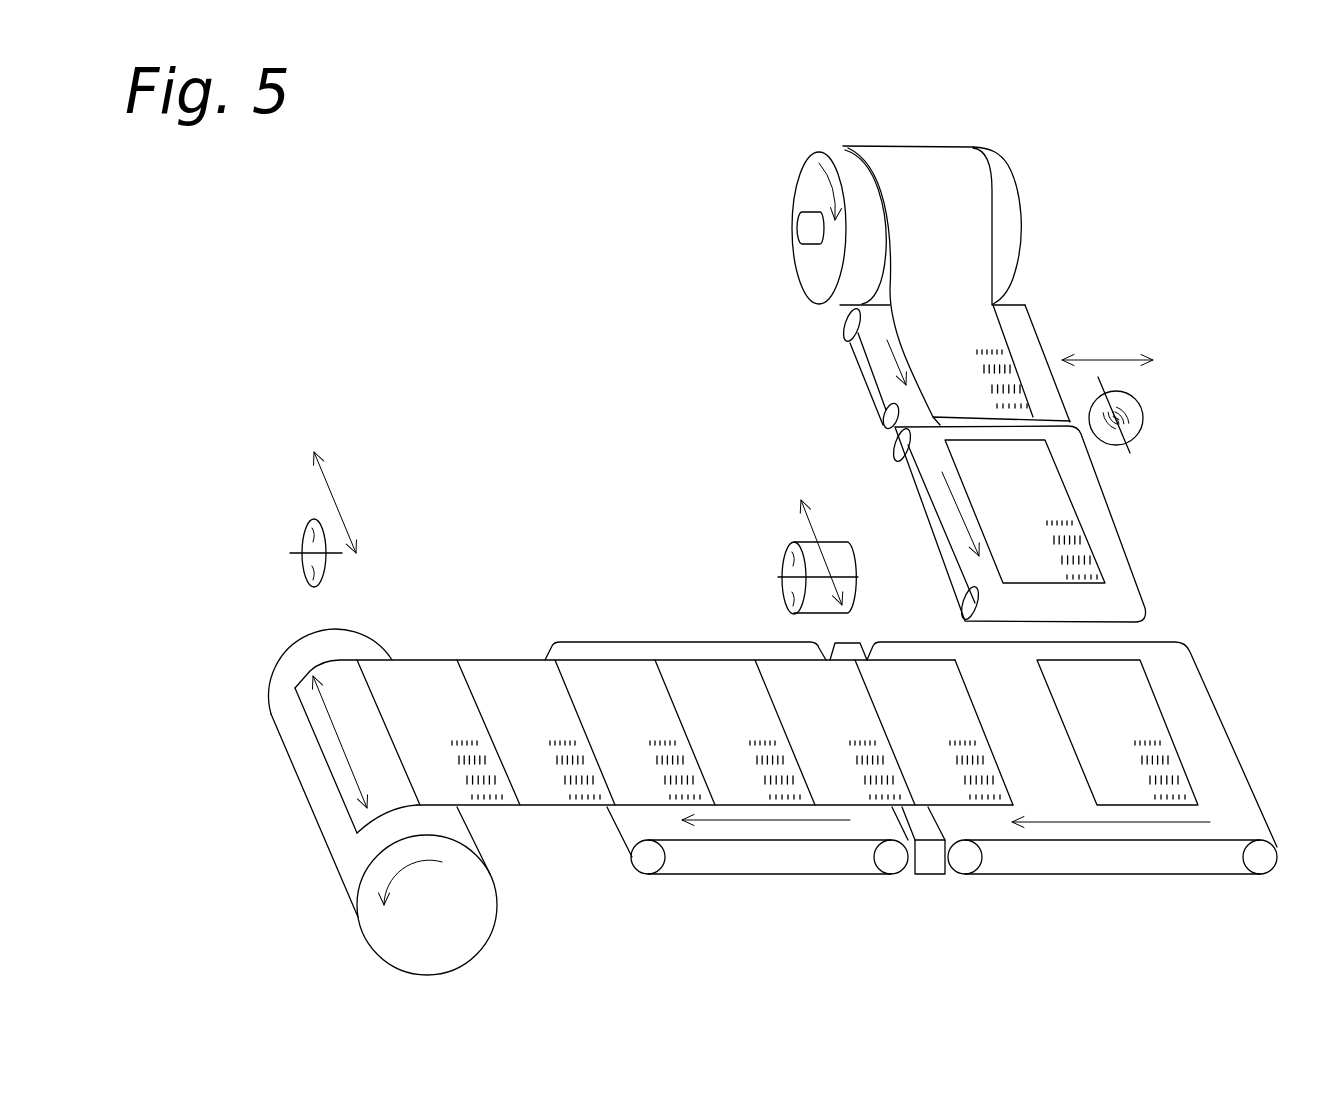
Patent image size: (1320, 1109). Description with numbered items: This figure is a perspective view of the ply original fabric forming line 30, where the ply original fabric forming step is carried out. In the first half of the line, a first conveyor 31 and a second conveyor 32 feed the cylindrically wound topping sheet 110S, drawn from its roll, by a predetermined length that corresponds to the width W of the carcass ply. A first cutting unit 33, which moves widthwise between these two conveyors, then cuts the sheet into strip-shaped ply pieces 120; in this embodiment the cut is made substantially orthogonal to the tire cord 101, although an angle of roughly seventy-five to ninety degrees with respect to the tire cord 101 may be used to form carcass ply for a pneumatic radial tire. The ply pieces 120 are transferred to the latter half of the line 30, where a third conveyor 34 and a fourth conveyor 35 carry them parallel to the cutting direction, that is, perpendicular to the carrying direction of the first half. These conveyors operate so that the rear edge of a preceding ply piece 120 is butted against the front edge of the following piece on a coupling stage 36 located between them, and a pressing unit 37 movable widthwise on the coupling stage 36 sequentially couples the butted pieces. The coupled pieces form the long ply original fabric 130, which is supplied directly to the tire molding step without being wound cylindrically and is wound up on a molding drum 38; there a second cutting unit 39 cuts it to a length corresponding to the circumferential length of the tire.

The ply original fabric forming line 30 is at (716, 468).
The first conveyor 31 is at (868, 370).
The second conveyor 32 is at (930, 514).
The first cutting unit 33 is at (1143, 432).
The third conveyor 34 is at (1037, 867).
The fourth conveyor 35 is at (755, 866).
The coupling stage 36 is at (938, 877).
The pressing unit 37 is at (790, 545).
The molding drum 38 is at (380, 648).
The second cutting unit 39 is at (300, 533).
The tire cord 101 is at (1013, 352).
The roll medium 110S is at (975, 235).
The strip-shaped ply pieces 120 is at (1140, 727).
The ply original fabric 130 is at (617, 703).